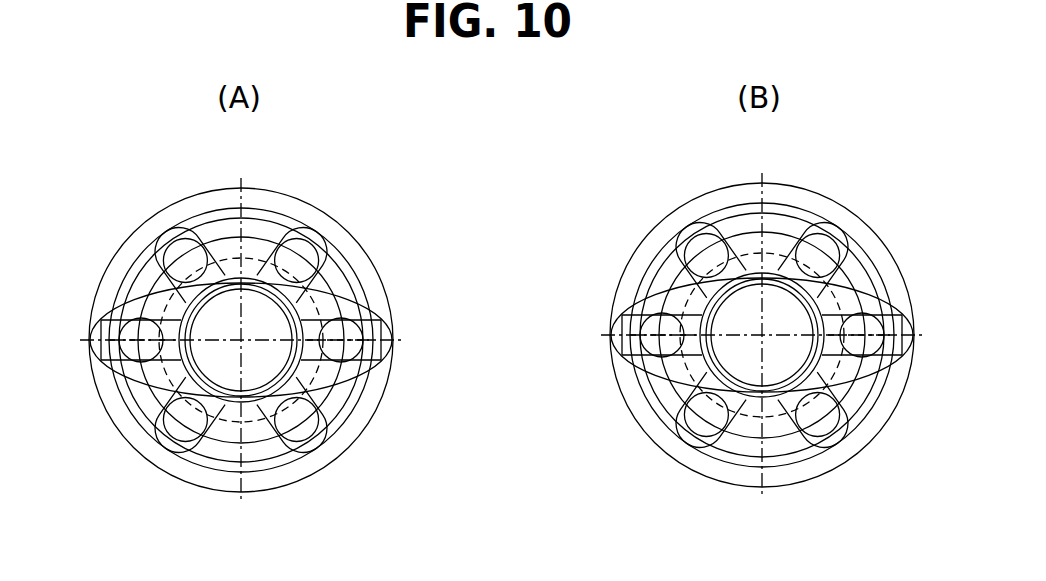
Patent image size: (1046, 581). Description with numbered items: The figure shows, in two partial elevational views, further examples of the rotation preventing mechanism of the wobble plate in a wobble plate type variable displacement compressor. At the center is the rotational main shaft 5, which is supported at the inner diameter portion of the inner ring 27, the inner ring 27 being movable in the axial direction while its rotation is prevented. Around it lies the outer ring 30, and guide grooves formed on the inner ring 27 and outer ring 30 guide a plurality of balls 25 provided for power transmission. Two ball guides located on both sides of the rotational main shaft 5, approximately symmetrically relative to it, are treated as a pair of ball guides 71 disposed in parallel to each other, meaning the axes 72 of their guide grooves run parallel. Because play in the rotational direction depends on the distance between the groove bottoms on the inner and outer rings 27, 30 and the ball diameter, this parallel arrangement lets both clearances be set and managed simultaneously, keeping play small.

The rotational main shaft 5 is at (213, 357).
The balls 25 is at (282, 433).
The inner ring 27 is at (317, 400).
The outer ring 30 is at (327, 305).
The pair of ball guides 71 is at (378, 368).
The axes of guide grooves 72 is at (318, 350).